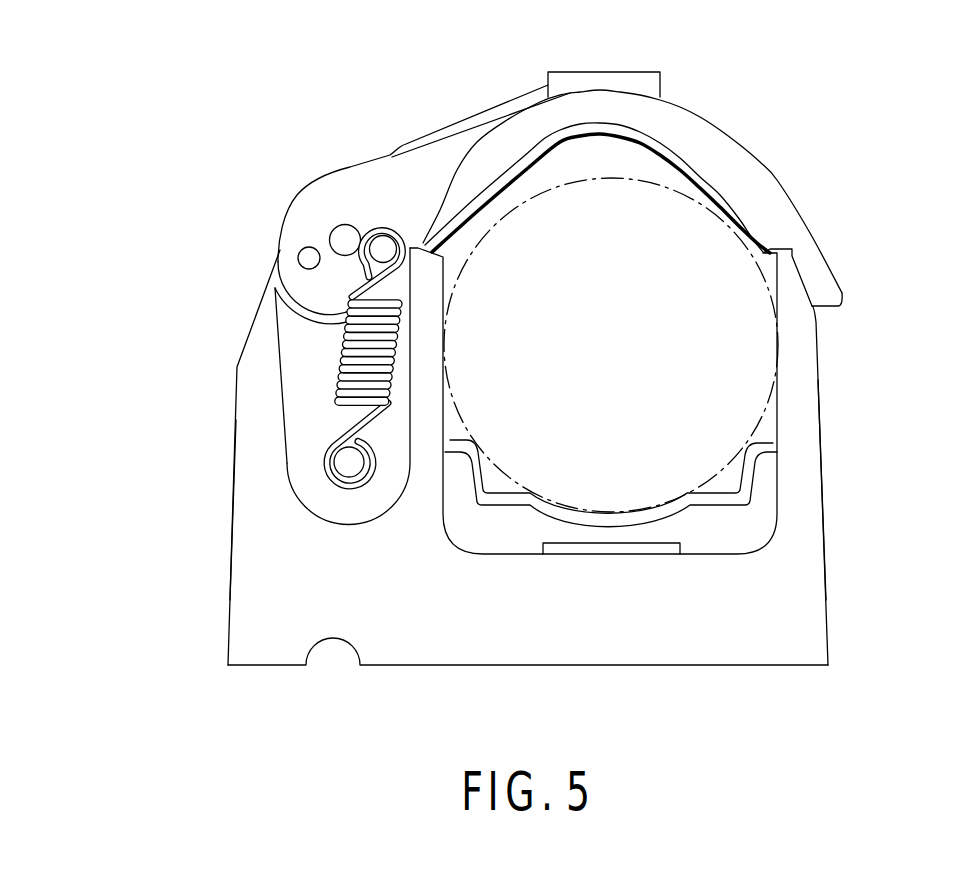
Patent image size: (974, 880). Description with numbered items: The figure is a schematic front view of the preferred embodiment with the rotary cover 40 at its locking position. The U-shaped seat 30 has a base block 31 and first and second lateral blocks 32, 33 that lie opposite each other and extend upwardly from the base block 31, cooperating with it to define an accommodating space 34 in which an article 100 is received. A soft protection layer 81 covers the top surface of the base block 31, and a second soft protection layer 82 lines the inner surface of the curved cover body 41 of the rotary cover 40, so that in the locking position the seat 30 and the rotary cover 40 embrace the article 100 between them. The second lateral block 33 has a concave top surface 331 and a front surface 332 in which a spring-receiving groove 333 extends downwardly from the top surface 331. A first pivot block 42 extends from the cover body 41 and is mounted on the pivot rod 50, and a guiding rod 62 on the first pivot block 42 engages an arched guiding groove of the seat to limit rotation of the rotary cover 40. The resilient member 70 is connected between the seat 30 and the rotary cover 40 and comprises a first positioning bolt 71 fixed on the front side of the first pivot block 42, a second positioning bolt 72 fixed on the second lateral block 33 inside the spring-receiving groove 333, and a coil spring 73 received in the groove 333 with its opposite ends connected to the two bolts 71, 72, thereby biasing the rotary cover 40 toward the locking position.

The U-shaped seat 30 is at (828, 551).
The base block 31 is at (610, 652).
The first lateral block 32 is at (812, 480).
The second lateral block 33 is at (233, 478).
The top surface 331 is at (273, 290).
The front surface 332 is at (247, 463).
The spring-receiving groove 333 is at (302, 430).
The accommodating space 34 is at (760, 378).
The rotary cover 40 is at (690, 97).
The cover body 41 is at (717, 140).
The first pivot block 42 is at (295, 217).
The pivot rod 50 is at (345, 232).
The guiding rod 62 is at (302, 262).
The resilient member 70 is at (310, 366).
The first positioning bolt 71 is at (385, 242).
The second positioning bolt 72 is at (350, 462).
The spring 73 is at (340, 387).
The soft protection layer 81 is at (712, 500).
The soft protection layer 82 is at (732, 203).
The article 100 is at (760, 217).